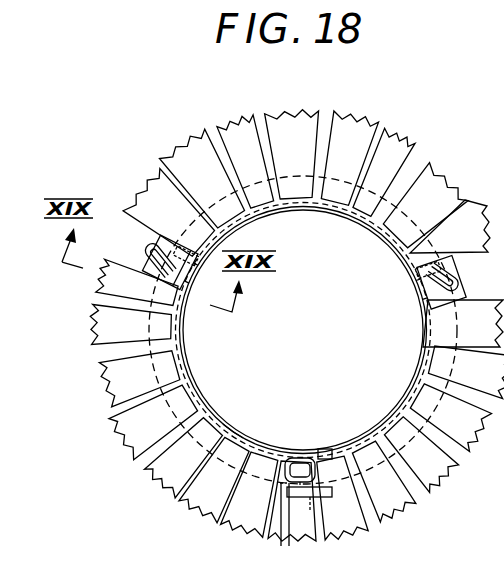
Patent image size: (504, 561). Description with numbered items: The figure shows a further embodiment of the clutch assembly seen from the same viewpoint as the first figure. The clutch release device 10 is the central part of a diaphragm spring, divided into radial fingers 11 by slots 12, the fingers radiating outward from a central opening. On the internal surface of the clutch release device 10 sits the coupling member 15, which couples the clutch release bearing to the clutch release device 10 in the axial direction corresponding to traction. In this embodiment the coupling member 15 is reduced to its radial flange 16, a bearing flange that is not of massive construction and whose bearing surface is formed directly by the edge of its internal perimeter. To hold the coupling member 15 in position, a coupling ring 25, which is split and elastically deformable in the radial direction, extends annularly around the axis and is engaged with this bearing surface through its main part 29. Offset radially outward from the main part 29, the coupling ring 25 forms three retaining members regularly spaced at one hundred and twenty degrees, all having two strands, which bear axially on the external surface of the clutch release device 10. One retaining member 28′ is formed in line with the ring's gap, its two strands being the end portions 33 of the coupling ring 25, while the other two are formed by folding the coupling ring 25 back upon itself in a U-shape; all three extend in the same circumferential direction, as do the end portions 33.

The clutch release device 10 is at (135, 483).
The radial fingers 11 is at (127, 382).
The slots 12 is at (426, 494).
The coupling member 15 is at (346, 219).
The radial flange 16 is at (373, 222).
The coupling ring 25 is at (250, 433).
The main part 29 is at (204, 401).
The retaining member 28′ is at (285, 481).
The end portions 33 is at (292, 522).